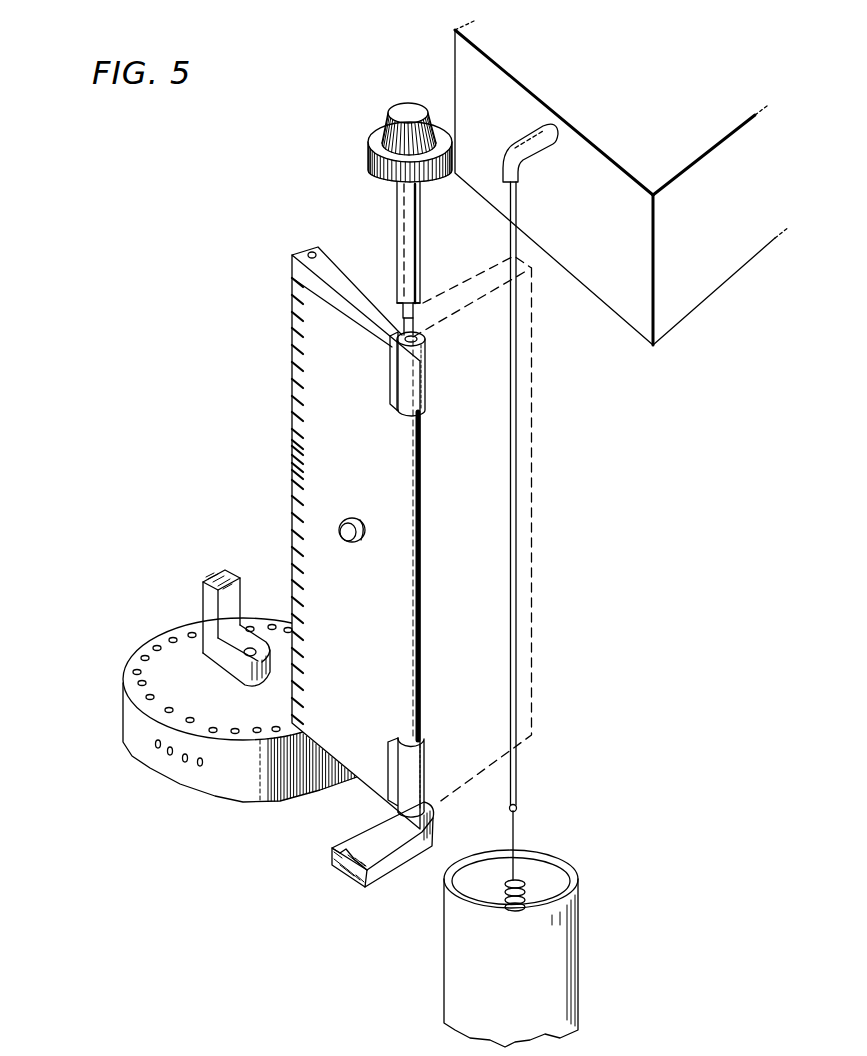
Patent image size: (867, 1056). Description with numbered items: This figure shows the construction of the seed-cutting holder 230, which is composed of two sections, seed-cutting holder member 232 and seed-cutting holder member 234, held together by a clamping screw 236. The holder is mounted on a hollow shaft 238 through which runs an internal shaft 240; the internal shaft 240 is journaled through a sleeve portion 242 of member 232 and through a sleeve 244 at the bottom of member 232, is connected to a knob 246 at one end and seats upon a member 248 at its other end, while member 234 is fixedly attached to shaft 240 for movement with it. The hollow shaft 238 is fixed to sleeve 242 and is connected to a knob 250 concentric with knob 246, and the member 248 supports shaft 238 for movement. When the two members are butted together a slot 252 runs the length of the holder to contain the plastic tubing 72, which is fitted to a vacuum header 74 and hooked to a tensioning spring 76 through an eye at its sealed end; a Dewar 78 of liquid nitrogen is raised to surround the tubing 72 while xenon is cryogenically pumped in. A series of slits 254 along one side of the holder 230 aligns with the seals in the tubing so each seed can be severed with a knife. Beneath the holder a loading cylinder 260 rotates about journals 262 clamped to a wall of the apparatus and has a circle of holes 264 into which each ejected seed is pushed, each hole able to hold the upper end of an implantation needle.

The vacuum header 74 is at (532, 152).
The thermoplastic tubing 72 is at (518, 503).
The tensioning spring 76 is at (522, 882).
The Dewar 78 is at (578, 932).
The seed-cutting holder 230 is at (280, 508).
The seed-cutting holder member 232 is at (331, 252).
The seed-cutting holder member 234 is at (290, 405).
The clamping screw 236 is at (340, 525).
The hollow shaft 238 is at (421, 227).
The internal shaft 240 is at (418, 318).
The sleeve portion 242 is at (413, 393).
The sleeve 244 is at (425, 772).
The knob 246 is at (408, 103).
The member 248 is at (333, 849).
The knob 250 is at (366, 153).
The slot 252 is at (306, 254).
The slits 254 is at (290, 478).
The loading cylinder 260 is at (195, 689).
The journals 262 is at (205, 590).
The holes 264 is at (186, 720).